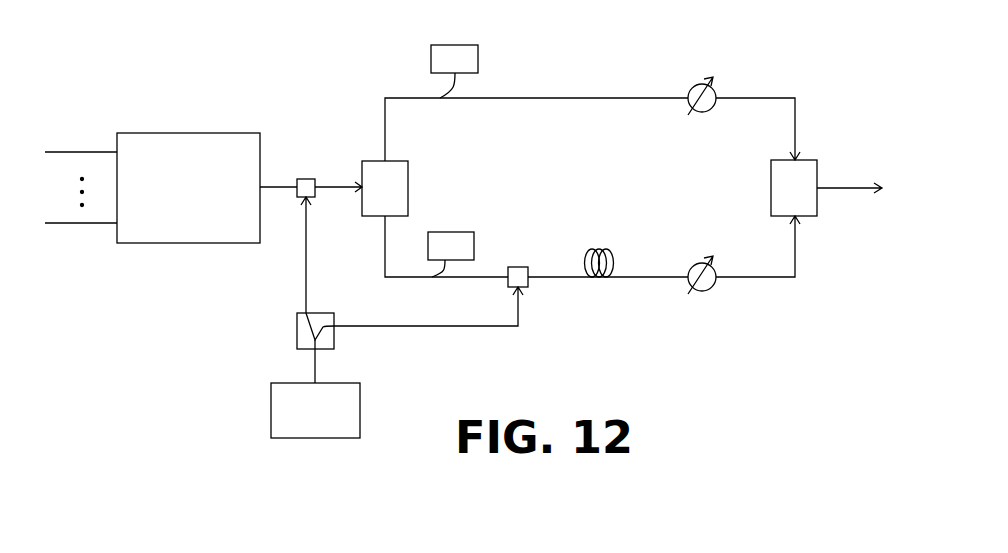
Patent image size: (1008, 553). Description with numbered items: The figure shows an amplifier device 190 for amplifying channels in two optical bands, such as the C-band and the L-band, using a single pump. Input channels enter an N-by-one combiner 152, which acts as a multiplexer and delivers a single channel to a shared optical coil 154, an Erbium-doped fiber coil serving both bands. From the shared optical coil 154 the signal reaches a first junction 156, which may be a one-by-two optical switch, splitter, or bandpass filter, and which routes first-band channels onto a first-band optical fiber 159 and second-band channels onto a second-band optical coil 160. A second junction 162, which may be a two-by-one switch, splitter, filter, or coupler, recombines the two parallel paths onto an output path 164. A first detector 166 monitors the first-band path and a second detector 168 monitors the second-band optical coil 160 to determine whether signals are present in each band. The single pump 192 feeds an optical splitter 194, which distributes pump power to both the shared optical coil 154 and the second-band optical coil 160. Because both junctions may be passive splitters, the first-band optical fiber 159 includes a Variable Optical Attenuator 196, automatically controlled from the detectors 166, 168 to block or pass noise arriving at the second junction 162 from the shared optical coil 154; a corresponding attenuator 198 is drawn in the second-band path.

The N×1 combiner 152 is at (203, 133).
The shared optical coil 154 is at (328, 186).
The first junction 156 is at (372, 217).
The first-band optical fiber 159 is at (599, 100).
The second-band optical coil 160 is at (645, 280).
The second junction 162 is at (770, 190).
The output path 164 is at (845, 187).
The first detector 166 is at (430, 62).
The second detector 168 is at (443, 232).
The amplifier device 190 is at (783, 343).
The pump 192 is at (270, 422).
The optical splitter 194 is at (297, 337).
The Variable Optical Attenuator 196 is at (693, 87).
The variable attenuator 198 is at (692, 267).